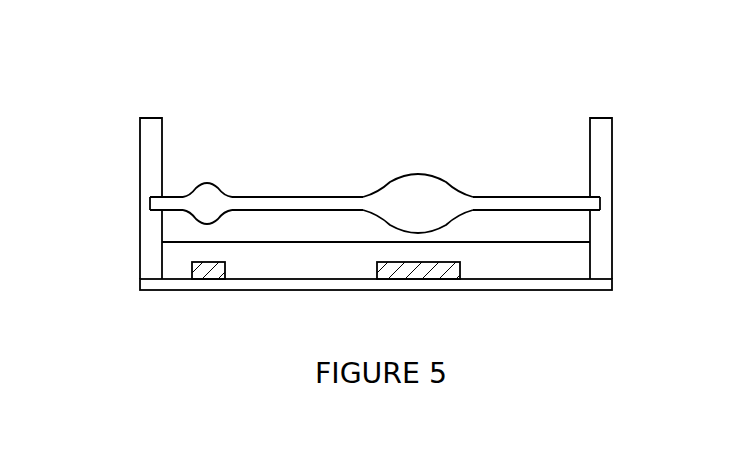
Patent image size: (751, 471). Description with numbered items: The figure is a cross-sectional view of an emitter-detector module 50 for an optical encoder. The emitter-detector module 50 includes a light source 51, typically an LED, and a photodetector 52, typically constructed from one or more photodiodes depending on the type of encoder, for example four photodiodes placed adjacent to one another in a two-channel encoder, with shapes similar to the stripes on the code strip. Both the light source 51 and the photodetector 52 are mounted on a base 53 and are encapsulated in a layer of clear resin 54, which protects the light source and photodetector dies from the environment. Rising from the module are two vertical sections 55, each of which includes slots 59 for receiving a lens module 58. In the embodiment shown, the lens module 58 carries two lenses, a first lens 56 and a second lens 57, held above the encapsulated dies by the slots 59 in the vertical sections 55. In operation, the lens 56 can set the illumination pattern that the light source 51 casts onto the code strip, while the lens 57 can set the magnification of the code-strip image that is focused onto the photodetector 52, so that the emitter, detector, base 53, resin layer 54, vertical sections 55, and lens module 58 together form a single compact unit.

The emitter-detector module 50 is at (106, 106).
The light source 51 is at (210, 273).
The photodetector 52 is at (440, 273).
The base 53 is at (574, 283).
The layer of clear resin 54 is at (527, 264).
The vertical sections 55 is at (148, 240).
The lens 56 is at (207, 196).
The lens 57 is at (438, 190).
The lens module 58 is at (319, 200).
The slots 59 is at (158, 197).